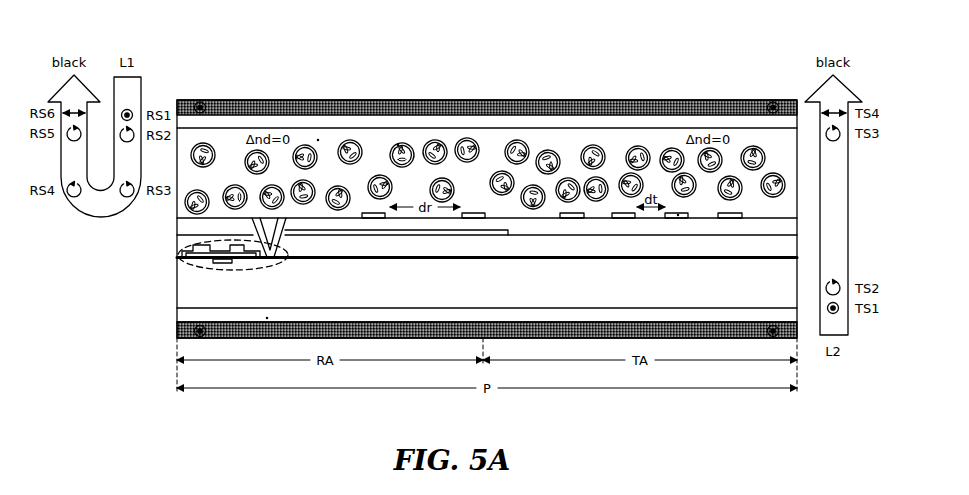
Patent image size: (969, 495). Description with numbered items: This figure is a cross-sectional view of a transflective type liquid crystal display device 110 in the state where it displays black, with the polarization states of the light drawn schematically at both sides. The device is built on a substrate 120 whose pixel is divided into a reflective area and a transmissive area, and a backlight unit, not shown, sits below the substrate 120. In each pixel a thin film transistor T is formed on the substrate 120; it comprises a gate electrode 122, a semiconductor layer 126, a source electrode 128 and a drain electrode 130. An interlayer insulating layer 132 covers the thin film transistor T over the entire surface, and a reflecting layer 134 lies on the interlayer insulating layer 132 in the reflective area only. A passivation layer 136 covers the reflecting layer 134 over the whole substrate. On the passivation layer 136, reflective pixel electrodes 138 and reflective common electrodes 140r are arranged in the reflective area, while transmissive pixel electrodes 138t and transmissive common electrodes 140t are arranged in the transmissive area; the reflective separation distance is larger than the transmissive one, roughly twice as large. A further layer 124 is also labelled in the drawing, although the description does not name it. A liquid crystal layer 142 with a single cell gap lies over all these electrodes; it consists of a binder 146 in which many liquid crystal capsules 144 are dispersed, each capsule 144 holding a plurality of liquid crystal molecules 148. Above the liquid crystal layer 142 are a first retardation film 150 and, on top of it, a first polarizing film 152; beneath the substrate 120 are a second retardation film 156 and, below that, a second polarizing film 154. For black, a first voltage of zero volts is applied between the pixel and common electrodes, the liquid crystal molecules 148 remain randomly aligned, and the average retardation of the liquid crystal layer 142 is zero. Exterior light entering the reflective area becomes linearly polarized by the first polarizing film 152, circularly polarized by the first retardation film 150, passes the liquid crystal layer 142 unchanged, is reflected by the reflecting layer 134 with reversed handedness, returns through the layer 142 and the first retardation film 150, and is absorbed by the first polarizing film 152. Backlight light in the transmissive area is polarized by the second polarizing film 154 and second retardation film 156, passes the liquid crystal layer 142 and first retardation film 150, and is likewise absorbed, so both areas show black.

The transflective type liquid crystal display device 110 is at (503, 20).
The substrate 120 is at (791, 297).
The gate electrode 122 is at (220, 264).
The gate insulating layer 124 is at (423, 262).
The semiconductor layer 126 is at (243, 262).
The source electrode 128 is at (188, 262).
The drain electrode 130 is at (268, 263).
The interlayer insulating layer 132 is at (458, 250).
The reflecting layer 134 is at (502, 236).
The passivation layer 136 is at (586, 230).
The reflective pixel electrode 138 is at (474, 218).
The transmissive pixel electrode 138t is at (679, 218).
The reflective common electrode 140r is at (382, 218).
The transmissive common electrode 140t is at (625, 218).
The liquid crystal layer 142 is at (427, 52).
The liquid crystal capsule 144 is at (398, 143).
The binder 146 is at (318, 137).
The liquid crystal molecule 148 is at (407, 143).
The first retardation film 150 is at (485, 124).
The first polarizing film 152 is at (572, 108).
The second polarizing film 154 is at (233, 340).
The second retardation film 156 is at (267, 318).
The thin film transistor T is at (183, 262).